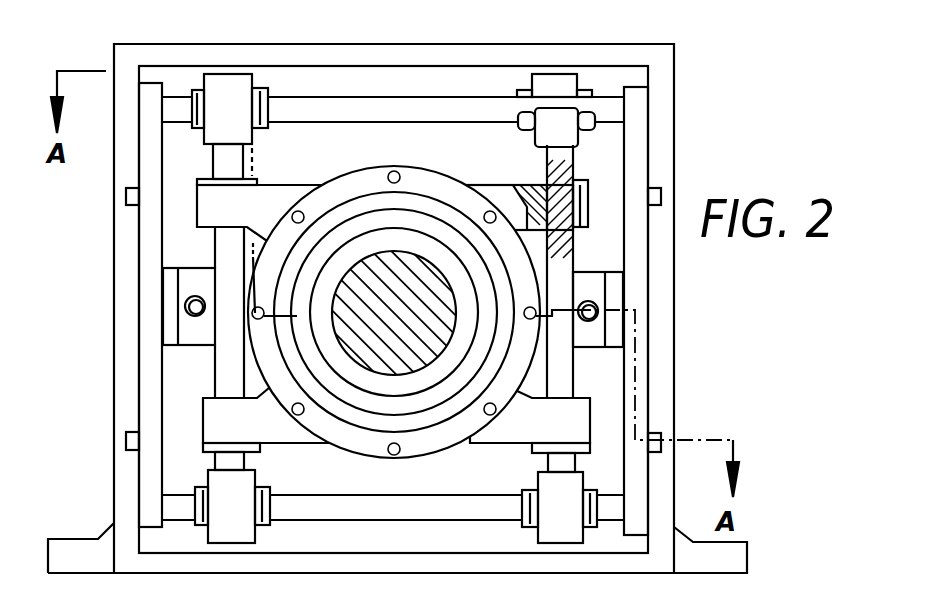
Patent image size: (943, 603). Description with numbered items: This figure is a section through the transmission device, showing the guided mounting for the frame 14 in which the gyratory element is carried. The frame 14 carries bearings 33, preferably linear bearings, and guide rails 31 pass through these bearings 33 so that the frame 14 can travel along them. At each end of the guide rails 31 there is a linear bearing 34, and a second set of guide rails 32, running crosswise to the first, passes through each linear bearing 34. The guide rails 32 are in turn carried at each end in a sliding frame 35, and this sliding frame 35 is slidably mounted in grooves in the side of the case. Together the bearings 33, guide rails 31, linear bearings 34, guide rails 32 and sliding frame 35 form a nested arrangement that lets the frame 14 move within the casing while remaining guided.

The frame 14 is at (502, 435).
The guide rails 31 is at (222, 162).
The guide rails 32 is at (330, 102).
The bearing 33 is at (535, 188).
The linear bearing 34 is at (550, 80).
The sliding frame 35 is at (633, 90).